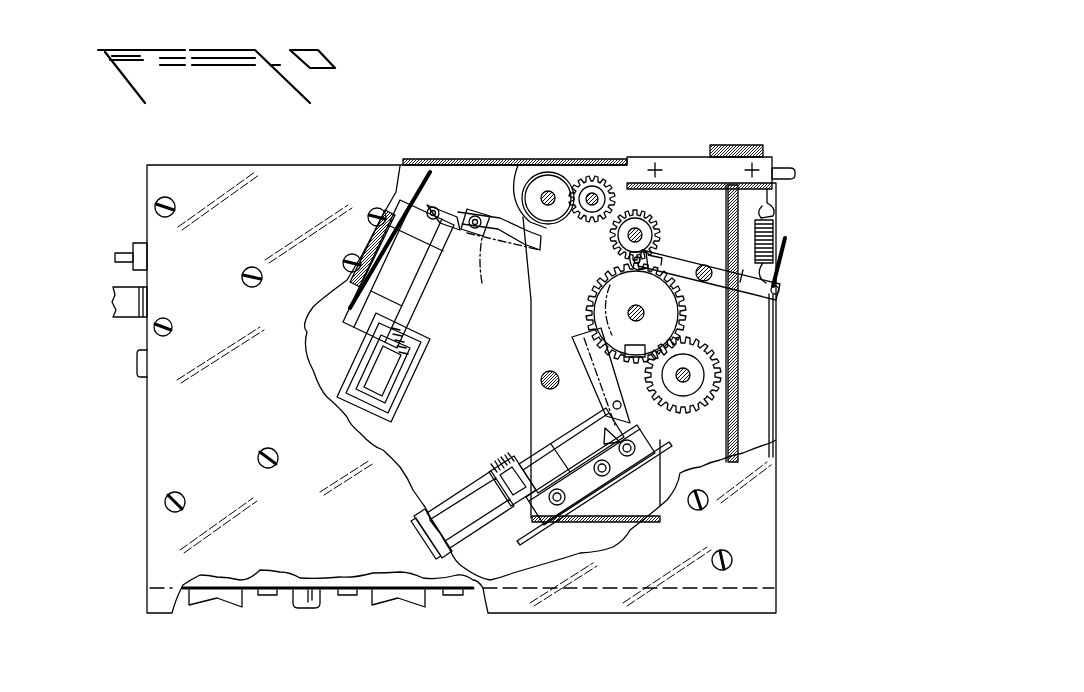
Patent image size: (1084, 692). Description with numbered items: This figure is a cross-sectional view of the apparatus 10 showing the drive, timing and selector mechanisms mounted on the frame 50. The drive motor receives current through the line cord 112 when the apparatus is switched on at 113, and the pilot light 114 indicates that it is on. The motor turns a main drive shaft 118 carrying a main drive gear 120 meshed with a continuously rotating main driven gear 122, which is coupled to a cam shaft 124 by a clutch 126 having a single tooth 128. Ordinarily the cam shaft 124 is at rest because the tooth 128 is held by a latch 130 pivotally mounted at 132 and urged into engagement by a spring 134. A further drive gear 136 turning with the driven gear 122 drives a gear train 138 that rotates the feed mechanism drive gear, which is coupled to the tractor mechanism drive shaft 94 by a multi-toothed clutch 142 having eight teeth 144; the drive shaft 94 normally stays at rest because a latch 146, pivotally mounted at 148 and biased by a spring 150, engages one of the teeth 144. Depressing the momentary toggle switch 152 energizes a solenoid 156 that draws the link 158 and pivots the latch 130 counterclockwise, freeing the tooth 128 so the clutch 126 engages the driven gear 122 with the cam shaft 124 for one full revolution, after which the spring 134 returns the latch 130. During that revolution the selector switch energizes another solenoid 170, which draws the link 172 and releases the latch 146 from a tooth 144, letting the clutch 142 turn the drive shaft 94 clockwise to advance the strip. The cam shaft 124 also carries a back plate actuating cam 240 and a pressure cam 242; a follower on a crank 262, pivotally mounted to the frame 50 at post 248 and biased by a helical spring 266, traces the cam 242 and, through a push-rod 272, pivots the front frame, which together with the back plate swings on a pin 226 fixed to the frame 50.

The apparatus 10 is at (207, 158).
The frame 50 is at (298, 522).
The tractor mechanism drive shaft 94 is at (553, 193).
The line cord 112 is at (136, 245).
The switch 113 is at (203, 600).
The pilot light 114 is at (304, 605).
The main drive shaft 118 is at (695, 373).
The main drive gear 120 is at (693, 400).
The main driven gear 122 is at (592, 301).
The cam shaft 124 is at (682, 299).
The clutch 126 is at (590, 319).
The tooth 128 is at (590, 333).
The latch 130 is at (565, 352).
The pivot 132 is at (636, 456).
The spring 134 is at (635, 434).
The further drive gear 136 is at (606, 283).
The gear train 138 is at (626, 208).
The multi-toothed clutch 142 is at (545, 183).
The teeth 144 is at (522, 196).
The latch 146 is at (515, 226).
The pivot 148 is at (418, 205).
The spring 150 is at (437, 207).
The momentary toggle switch 152 is at (385, 593).
The solenoid 156 is at (450, 518).
The link 158 is at (525, 470).
The solenoid 170 is at (365, 410).
The link 172 is at (448, 272).
The pin 226 is at (790, 168).
The back plate actuating cam 240 is at (688, 322).
The pressure cam 242 is at (653, 284).
The post 248 is at (703, 266).
The crank 262 is at (782, 290).
The helical spring 266 is at (773, 236).
The push-rod 272 is at (790, 252).